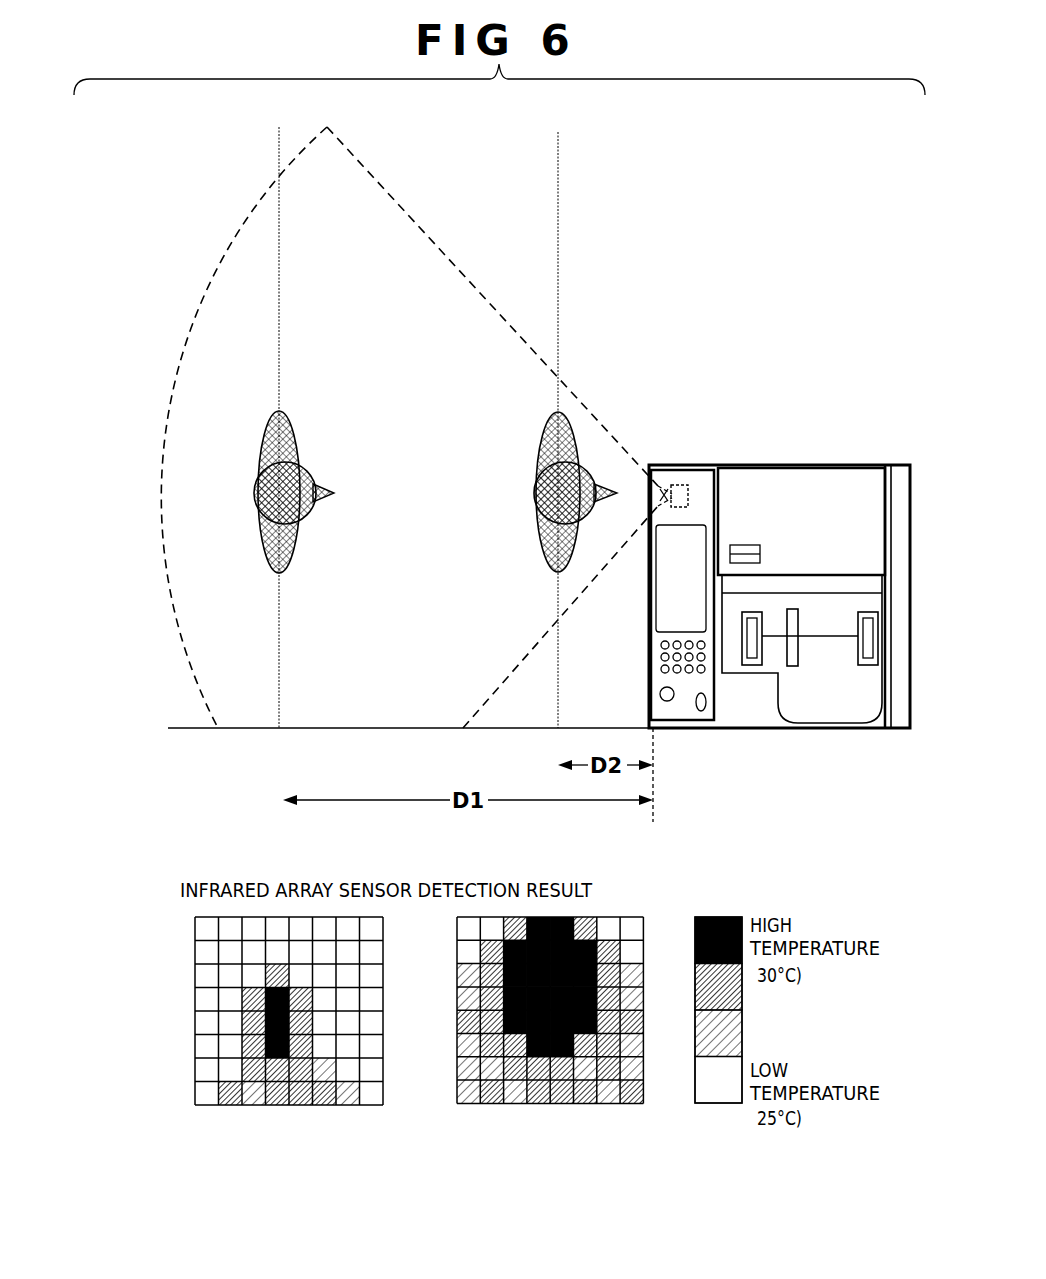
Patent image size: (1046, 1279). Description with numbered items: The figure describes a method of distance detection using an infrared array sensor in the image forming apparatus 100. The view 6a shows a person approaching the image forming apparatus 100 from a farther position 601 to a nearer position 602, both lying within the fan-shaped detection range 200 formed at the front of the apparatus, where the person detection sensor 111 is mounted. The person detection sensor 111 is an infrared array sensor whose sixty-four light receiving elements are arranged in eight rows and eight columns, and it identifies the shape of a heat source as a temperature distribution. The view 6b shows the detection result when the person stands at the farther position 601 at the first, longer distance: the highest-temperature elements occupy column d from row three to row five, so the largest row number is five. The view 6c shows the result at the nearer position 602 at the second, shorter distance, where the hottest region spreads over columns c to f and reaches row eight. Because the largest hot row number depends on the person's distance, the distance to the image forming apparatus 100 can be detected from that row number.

The image forming apparatus 100 is at (811, 450).
The person detection sensor 111 is at (690, 484).
The detection range 200 is at (160, 488).
The position indicated by reference numeral 601 is at (280, 409).
The position indicated by reference numeral 602 is at (560, 410).
The view 6a is at (780, 230).
The view 6b is at (212, 1160).
The view 6c is at (472, 1160).